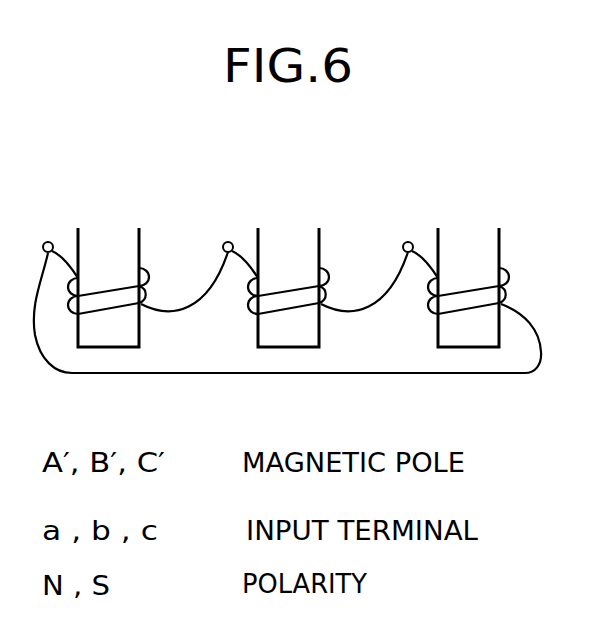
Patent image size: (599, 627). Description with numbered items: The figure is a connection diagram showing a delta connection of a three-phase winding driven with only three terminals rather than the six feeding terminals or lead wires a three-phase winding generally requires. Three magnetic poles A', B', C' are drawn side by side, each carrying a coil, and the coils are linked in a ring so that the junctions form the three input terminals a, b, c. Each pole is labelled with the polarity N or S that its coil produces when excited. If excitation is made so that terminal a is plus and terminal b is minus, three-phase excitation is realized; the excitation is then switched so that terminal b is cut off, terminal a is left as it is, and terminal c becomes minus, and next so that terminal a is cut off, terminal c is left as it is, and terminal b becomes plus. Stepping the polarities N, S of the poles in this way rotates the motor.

The magnetic pole A' is at (108, 287).
The magnetic pole B' is at (288, 287).
The magnetic pole C' is at (468, 287).
The terminal a is at (59, 242).
The terminal b is at (239, 242).
The terminal c is at (419, 242).
The polarity N is at (109, 331).
The polarity S is at (378, 331).